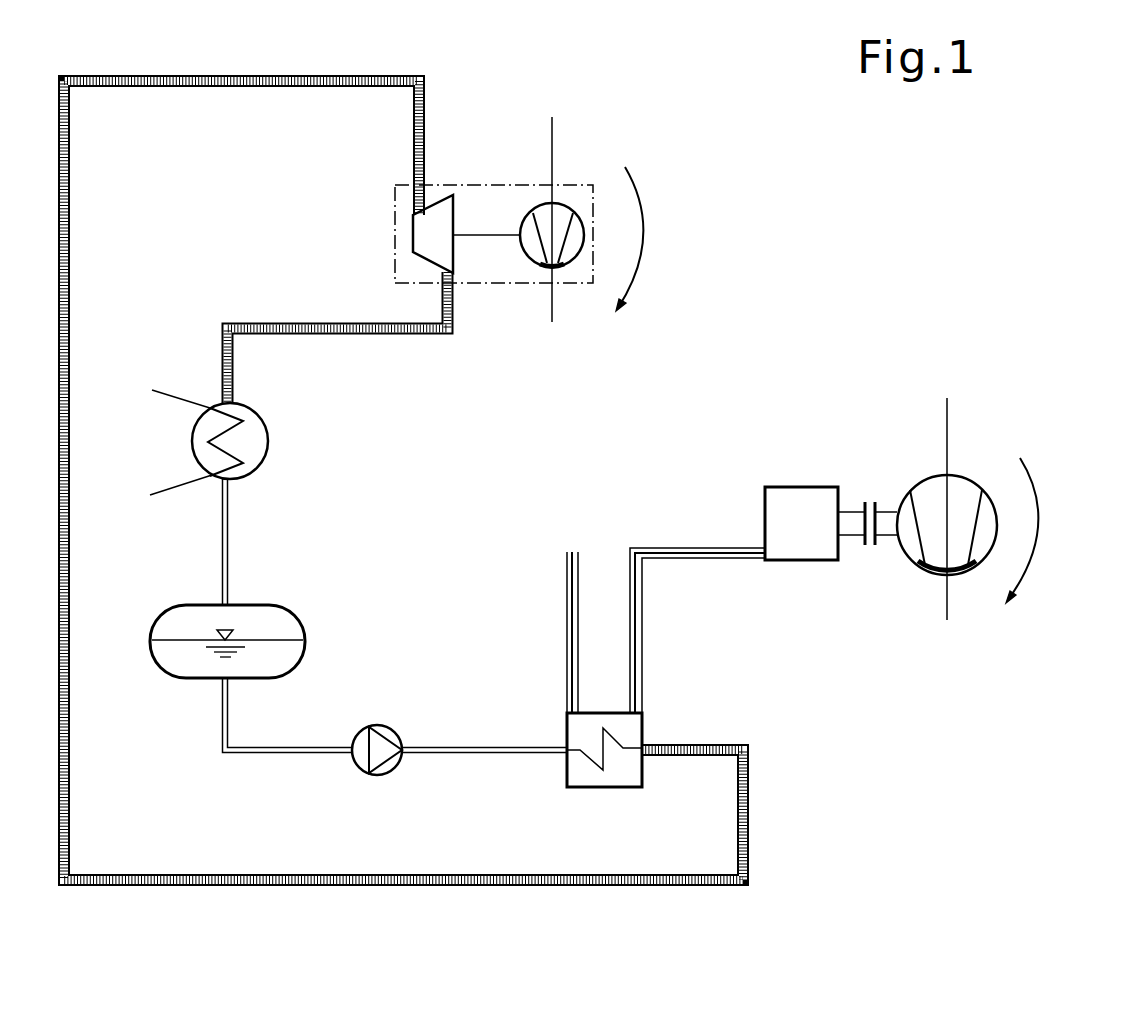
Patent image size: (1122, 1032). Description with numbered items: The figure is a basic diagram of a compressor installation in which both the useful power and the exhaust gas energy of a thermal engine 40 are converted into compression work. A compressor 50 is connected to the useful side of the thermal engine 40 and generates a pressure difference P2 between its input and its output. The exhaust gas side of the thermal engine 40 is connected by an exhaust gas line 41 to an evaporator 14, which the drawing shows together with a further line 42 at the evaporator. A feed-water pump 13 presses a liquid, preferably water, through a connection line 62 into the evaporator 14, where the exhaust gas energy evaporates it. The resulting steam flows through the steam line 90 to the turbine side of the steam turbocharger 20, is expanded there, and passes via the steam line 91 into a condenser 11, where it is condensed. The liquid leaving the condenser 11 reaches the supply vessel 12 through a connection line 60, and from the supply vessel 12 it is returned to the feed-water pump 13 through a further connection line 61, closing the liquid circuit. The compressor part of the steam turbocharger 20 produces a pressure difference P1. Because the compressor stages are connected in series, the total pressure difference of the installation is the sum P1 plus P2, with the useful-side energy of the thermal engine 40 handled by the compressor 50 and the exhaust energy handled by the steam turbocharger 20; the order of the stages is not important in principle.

The condenser 11 is at (190, 450).
The supply vessel 12 is at (165, 610).
The feed-water pump 13 is at (388, 776).
The evaporator 14 is at (630, 789).
The steam turbocharger 20 is at (396, 212).
The thermal engine 40 is at (772, 487).
The exhaust gas line 41 is at (640, 632).
The coolant line 42 is at (565, 640).
The compressor 50 is at (903, 553).
The connection line 60 is at (220, 507).
The refrigerant line 61 is at (317, 755).
The connection line 62 is at (457, 754).
The steam line 90 is at (172, 886).
The steam line 91 is at (328, 323).
The pressure difference P1 is at (647, 272).
The pressure difference P2 is at (1043, 555).